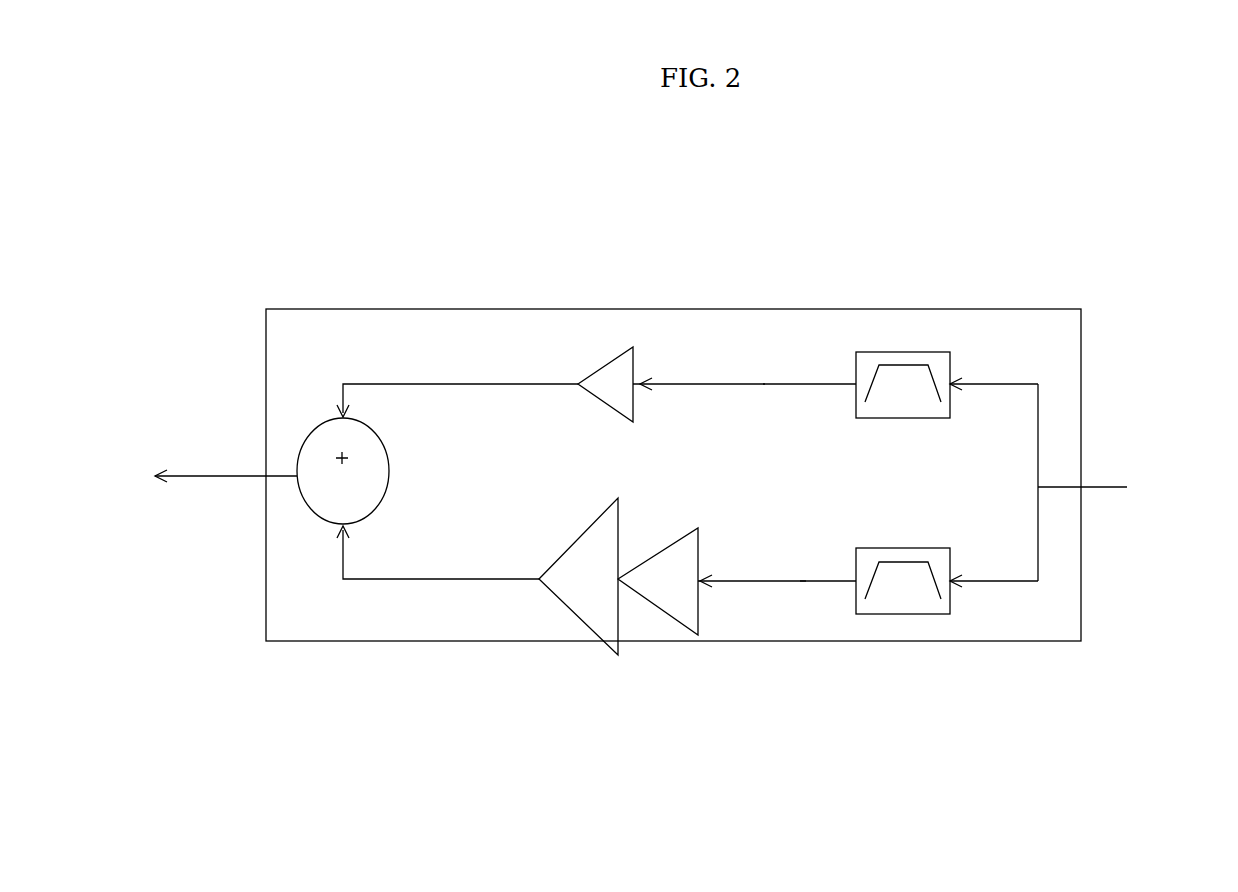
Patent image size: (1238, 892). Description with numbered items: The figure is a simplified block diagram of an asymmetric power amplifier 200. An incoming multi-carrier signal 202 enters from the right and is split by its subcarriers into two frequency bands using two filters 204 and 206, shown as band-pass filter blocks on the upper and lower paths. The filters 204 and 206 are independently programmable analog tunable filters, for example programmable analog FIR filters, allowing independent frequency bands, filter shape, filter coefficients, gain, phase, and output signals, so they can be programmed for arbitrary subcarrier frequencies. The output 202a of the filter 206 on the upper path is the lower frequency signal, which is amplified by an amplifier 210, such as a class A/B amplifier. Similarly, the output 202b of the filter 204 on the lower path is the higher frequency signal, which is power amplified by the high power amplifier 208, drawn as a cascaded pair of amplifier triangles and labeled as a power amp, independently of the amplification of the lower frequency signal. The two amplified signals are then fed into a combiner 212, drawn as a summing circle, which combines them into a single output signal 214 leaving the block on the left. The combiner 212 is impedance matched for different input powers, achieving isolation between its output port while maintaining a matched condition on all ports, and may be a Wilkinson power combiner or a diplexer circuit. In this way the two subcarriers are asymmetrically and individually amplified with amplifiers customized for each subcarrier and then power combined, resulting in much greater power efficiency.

The asymmetric power amplifier 200 is at (578, 288).
The incoming multi-carrier signal 202 is at (1102, 487).
The output of the filter 206 202a is at (763, 385).
The output of the filter 204 202b is at (803, 580).
The filter 204 is at (903, 614).
The filter 206 is at (903, 350).
The high power amplifier 208 is at (633, 617).
The amplifier 210 is at (605, 360).
The combiner 212 is at (312, 517).
The single output signal 214 is at (216, 475).